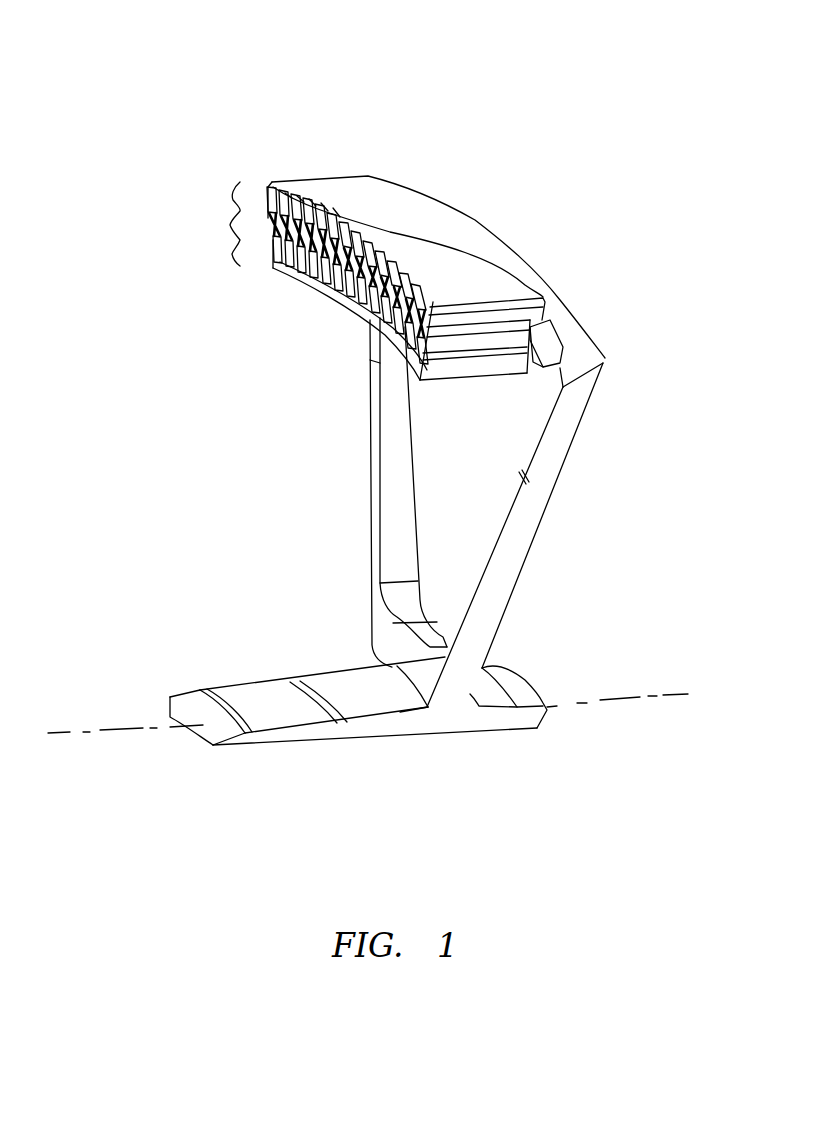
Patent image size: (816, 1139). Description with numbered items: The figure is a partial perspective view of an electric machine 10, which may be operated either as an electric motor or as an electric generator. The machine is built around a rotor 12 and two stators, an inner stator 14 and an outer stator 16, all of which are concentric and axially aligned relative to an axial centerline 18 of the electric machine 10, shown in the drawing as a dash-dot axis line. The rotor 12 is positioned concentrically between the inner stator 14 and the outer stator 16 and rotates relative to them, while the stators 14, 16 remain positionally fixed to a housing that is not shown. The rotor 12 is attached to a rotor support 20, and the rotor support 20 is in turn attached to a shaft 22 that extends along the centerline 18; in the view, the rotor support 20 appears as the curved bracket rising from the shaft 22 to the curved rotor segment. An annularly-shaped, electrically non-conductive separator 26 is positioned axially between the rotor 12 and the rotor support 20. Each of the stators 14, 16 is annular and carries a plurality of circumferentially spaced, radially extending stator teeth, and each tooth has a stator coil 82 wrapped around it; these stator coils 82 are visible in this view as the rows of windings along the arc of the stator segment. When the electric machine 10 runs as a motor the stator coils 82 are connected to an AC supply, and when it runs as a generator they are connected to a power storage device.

The electric machine 10 is at (102, 78).
The rotor 12 is at (230, 225).
The inner stator 14 is at (232, 254).
The outer stator 16 is at (232, 198).
The axial centerline 18 is at (57, 733).
The rotor support 20 is at (543, 520).
The shaft 22 is at (254, 690).
The separator 26 is at (553, 338).
The stator coils 82 is at (350, 231).